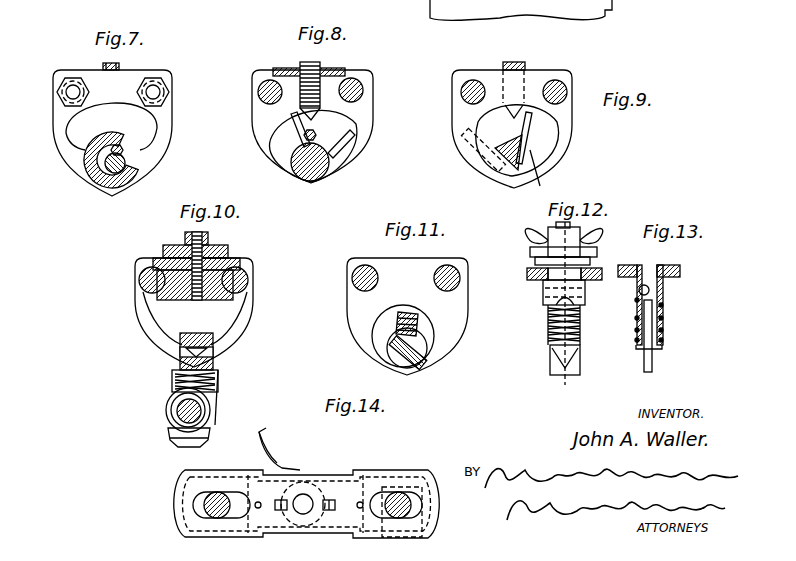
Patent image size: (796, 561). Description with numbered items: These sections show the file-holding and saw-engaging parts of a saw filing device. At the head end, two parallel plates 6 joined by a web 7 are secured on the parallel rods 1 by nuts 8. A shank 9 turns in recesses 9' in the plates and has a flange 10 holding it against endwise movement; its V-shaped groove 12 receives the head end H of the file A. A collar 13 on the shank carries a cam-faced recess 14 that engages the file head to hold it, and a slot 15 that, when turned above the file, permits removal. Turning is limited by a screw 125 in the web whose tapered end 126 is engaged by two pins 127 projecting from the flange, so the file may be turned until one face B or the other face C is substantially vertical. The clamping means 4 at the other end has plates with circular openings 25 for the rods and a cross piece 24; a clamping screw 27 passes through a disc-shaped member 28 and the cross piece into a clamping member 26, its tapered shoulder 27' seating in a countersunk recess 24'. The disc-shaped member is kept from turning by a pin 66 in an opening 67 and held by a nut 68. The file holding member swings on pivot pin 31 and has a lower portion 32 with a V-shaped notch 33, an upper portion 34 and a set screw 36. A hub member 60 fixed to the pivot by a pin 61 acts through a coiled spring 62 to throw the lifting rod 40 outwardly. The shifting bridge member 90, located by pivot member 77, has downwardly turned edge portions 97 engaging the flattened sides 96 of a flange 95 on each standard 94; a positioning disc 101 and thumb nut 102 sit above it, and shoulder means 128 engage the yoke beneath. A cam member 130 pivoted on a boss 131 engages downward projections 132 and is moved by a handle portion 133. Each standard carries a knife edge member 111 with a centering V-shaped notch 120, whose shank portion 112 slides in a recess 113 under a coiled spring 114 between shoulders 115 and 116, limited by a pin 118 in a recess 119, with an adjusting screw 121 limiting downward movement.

In FIG. 7, the parallel rods 1 is at (73, 92).
In FIG. 8, the parallel rods 1 is at (270, 92).
In FIG. 9, the parallel rods 1 is at (477, 88).
In FIG. 11, the parallel rods 1 is at (368, 270).
In FIG. 14, the parallel rods 1 is at (200, 505).
In FIG. 10, the clamping means 4 is at (257, 263).
In FIG. 7, the parallel plates 6 is at (160, 118).
In FIG. 8, the parallel plates 6 is at (270, 118).
In FIG. 9, the parallel plates 6 is at (470, 135).
In FIG. 8, the web 7 is at (322, 78).
In FIG. 7, the nuts 8 is at (62, 80).
In FIG. 7, the shank 9 is at (115, 186).
In FIG. 7, the recesses 9' is at (100, 185).
In FIG. 8, the recesses 9' is at (299, 166).
In FIG. 8, the flange 10 is at (335, 172).
In FIG. 7, the V-shaped groove 12 is at (98, 180).
In FIG. 8, the V-shaped groove 12 is at (318, 178).
In FIG. 9, the V-shaped groove 12 is at (540, 170).
In FIG. 7, the collar 13 is at (85, 170).
In FIG. 12, the collar 13 is at (599, 265).
In FIG. 7, the cam-faced recess 14 is at (125, 140).
In FIG. 7, the slot 15 is at (140, 172).
In FIG. 10, the cross piece 24 is at (219, 256).
In FIG. 10, the countersunk recess 24' is at (266, 280).
In FIG. 10, the circular openings 25 is at (190, 303).
In FIG. 10, the clamping member 26 is at (230, 300).
In FIG. 10, the clamping screw 27 is at (212, 241).
In FIG. 10, the tapered shoulder 27' is at (265, 238).
In FIG. 10, the disc-shaped member 28 is at (163, 252).
In FIG. 10, the pivot pin 31 is at (213, 362).
In FIG. 11, the lower portion 32 is at (425, 360).
In FIG. 11, the V-shaped notch 33 is at (395, 350).
In FIG. 11, the upper portion 34 is at (408, 315).
In FIG. 11, the set screw 36 is at (385, 325).
In FIG. 10, the rod 40 is at (185, 410).
In FIG. 10, the hub member 60 is at (213, 345).
In FIG. 10, the pin 61 is at (205, 342).
In FIG. 10, the coiled spring 62 is at (218, 380).
In FIG. 10, the pin 66 is at (140, 275).
In FIG. 10, the opening 67 is at (150, 285).
In FIG. 10, the nut 68 is at (185, 238).
In FIG. 14, the pivot member 77 is at (303, 514).
In FIG. 14, the shifting bridge member 90 is at (307, 504).
In FIG. 13, the standard 94 is at (680, 268).
In FIG. 14, the flange 95 is at (425, 470).
In FIG. 12, the flattened sides 96 is at (540, 279).
In FIG. 14, the flattened sides 96 is at (420, 522).
In FIG. 12, the downwardly turned edge portions 97 is at (535, 258).
In FIG. 14, the downwardly turned edge portions 97 is at (235, 471).
In FIG. 12, the positioning disc 101 is at (585, 240).
In FIG. 12, the thumb nut 102 is at (598, 225).
In FIG. 12, the knife edge member 111 is at (560, 355).
In FIG. 13, the knife edge member 111 is at (652, 358).
In FIG. 13, the shank portion 112 is at (665, 315).
In FIG. 13, the recess 113 is at (665, 290).
In FIG. 12, the coiled spring 114 is at (556, 322).
In FIG. 13, the coiled spring 114 is at (638, 335).
In FIG. 12, the shoulder 115 is at (585, 300).
In FIG. 13, the shoulder 115 is at (663, 300).
In FIG. 12, the shoulder 116 is at (582, 340).
In FIG. 13, the shoulder 116 is at (663, 340).
In FIG. 13, the pin 118 is at (640, 290).
In FIG. 13, the recess 119 is at (643, 298).
In FIG. 12, the V-shaped notch 120 is at (580, 365).
In FIG. 12, the adjusting screw 121 is at (532, 240).
In FIG. 7, the screw 125 is at (120, 66).
In FIG. 8, the screw 125 is at (320, 66).
In FIG. 9, the screw 125 is at (525, 66).
In FIG. 8, the tapered portion 126 is at (323, 108).
In FIG. 8, the pins 127 is at (355, 140).
In FIG. 9, the pins 127 is at (530, 130).
In FIG. 14, the shoulder means 128 is at (436, 500).
In FIG. 14, the cam member 130 is at (300, 482).
In FIG. 14, the boss 131 is at (312, 495).
In FIG. 14, the downward projections 132 is at (275, 500).
In FIG. 14, the handle portion 133 is at (264, 432).
In FIG. 9, the file A is at (510, 148).
In FIG. 11, the file A is at (410, 343).
In FIG. 9, the face of the file B is at (525, 155).
In FIG. 9, the face of the file C is at (508, 170).
In FIG. 7, the head end of the file H is at (140, 145).
In FIG. 8, the head end of the file H is at (348, 142).